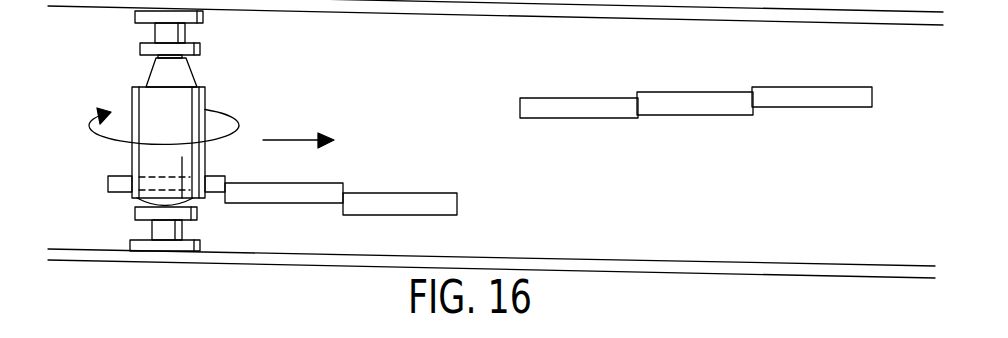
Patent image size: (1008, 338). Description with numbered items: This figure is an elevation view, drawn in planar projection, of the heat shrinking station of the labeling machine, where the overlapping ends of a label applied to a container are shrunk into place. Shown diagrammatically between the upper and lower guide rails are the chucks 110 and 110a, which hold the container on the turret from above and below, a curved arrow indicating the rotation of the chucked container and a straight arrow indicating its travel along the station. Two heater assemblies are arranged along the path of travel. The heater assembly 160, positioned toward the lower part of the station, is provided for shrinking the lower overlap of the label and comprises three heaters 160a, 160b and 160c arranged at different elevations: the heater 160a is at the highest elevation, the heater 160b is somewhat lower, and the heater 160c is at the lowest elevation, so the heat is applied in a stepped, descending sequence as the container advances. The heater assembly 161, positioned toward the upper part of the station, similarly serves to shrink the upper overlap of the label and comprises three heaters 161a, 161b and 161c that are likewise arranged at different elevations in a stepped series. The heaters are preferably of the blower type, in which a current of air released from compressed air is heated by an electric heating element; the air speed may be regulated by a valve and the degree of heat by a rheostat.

The chuck 110 is at (200, 48).
The chuck 110a is at (199, 216).
The heater assembly 160 is at (289, 200).
The heater 160a is at (210, 178).
The heater 160b is at (285, 200).
The heater 160c is at (407, 205).
The heater assembly 161 is at (696, 106).
The heater 161a is at (585, 107).
The heater 161b is at (710, 102).
The heater 161c is at (828, 100).